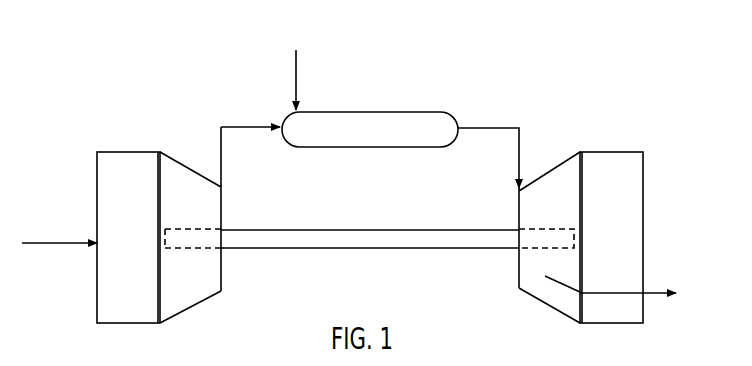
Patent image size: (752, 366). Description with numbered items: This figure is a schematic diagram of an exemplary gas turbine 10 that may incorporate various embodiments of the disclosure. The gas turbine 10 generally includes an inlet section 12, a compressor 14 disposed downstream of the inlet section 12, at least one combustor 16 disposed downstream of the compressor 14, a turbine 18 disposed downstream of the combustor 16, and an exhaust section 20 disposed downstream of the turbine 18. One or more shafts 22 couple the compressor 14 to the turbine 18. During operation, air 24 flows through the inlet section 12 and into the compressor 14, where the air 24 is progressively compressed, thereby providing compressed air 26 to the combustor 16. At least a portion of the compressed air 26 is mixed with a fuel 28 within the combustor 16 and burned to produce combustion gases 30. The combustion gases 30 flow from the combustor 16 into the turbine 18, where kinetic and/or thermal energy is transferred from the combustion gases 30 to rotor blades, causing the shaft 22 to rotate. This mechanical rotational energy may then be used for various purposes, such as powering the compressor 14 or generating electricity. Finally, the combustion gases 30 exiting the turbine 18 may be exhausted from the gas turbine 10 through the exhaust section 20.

The gas turbine 10 is at (252, 60).
The inlet section 12 is at (118, 152).
The compressor 14 is at (189, 166).
The combustor 16 is at (415, 112).
The turbine 18 is at (577, 158).
The exhaust section 20 is at (638, 150).
The shaft 22 is at (343, 249).
The air 24 is at (71, 239).
The compressed air 26 is at (250, 132).
The fuel 28 is at (298, 88).
The combustion gases 30 is at (477, 130).